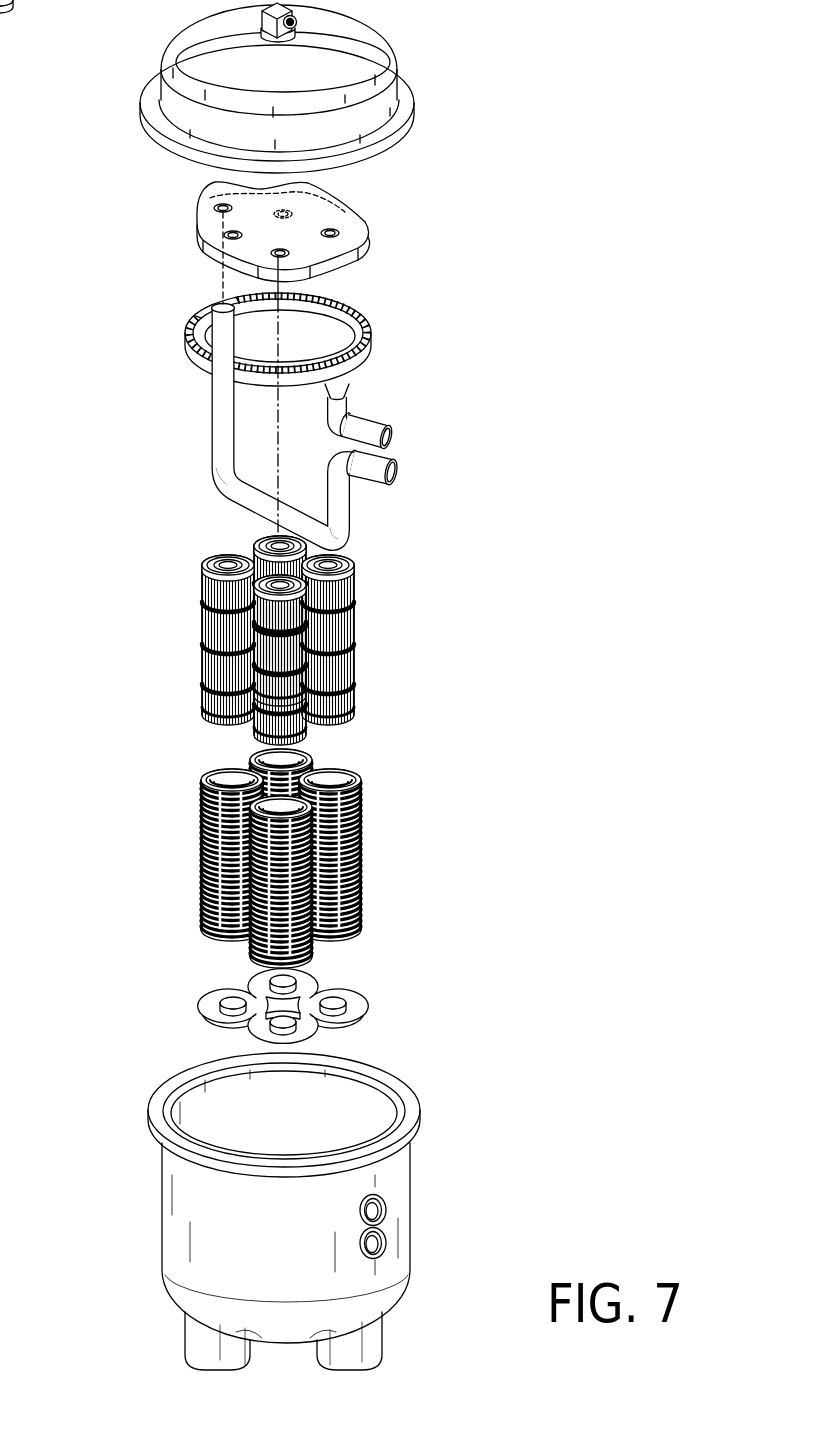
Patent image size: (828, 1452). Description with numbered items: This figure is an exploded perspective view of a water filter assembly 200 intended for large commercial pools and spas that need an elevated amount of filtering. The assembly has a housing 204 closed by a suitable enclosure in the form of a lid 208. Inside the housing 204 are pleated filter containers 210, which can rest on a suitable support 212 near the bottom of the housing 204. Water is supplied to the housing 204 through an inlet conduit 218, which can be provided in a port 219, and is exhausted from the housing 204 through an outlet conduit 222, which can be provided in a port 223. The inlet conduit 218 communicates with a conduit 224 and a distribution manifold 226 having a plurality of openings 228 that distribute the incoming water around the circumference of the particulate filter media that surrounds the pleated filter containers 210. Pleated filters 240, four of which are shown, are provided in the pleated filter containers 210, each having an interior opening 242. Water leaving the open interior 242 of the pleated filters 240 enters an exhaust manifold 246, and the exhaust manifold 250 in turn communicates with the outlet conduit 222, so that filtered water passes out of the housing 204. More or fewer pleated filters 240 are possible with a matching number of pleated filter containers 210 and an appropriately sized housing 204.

The water filter assembly 200 is at (347, 685).
The housing 204 is at (355, 1211).
The lid 208 is at (343, 43).
The pleated filter containers 210 is at (363, 858).
The support 212 is at (352, 1003).
The inlet conduit 218 is at (368, 427).
The port 219 is at (380, 1210).
The outlet conduit 222 is at (368, 473).
The port 223 is at (380, 1244).
The conduit 224 is at (340, 398).
The distribution manifold 226 is at (340, 330).
The openings 228 is at (337, 298).
The pleated filters 240 is at (277, 640).
The interior openings 242 is at (228, 562).
The exhaust manifold 246 is at (343, 211).
The exhaust manifold 250 is at (278, 422).